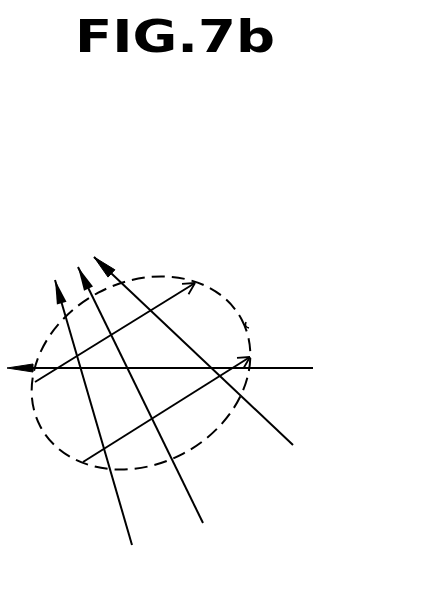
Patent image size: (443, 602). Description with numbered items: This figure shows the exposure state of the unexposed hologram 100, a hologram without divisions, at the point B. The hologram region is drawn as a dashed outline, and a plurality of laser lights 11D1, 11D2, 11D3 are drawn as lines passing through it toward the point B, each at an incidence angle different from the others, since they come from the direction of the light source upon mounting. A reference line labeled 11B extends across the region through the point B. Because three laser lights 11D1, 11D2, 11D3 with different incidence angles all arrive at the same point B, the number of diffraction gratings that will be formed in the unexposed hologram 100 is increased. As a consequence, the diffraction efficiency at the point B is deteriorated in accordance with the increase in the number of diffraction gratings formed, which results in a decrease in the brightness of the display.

The unexposed hologram 100 is at (174, 298).
The light beam 11B is at (302, 366).
The point B is at (247, 326).
The laser light 11D1 is at (280, 433).
The laser light 11D2 is at (201, 512).
The laser light 11D3 is at (132, 545).